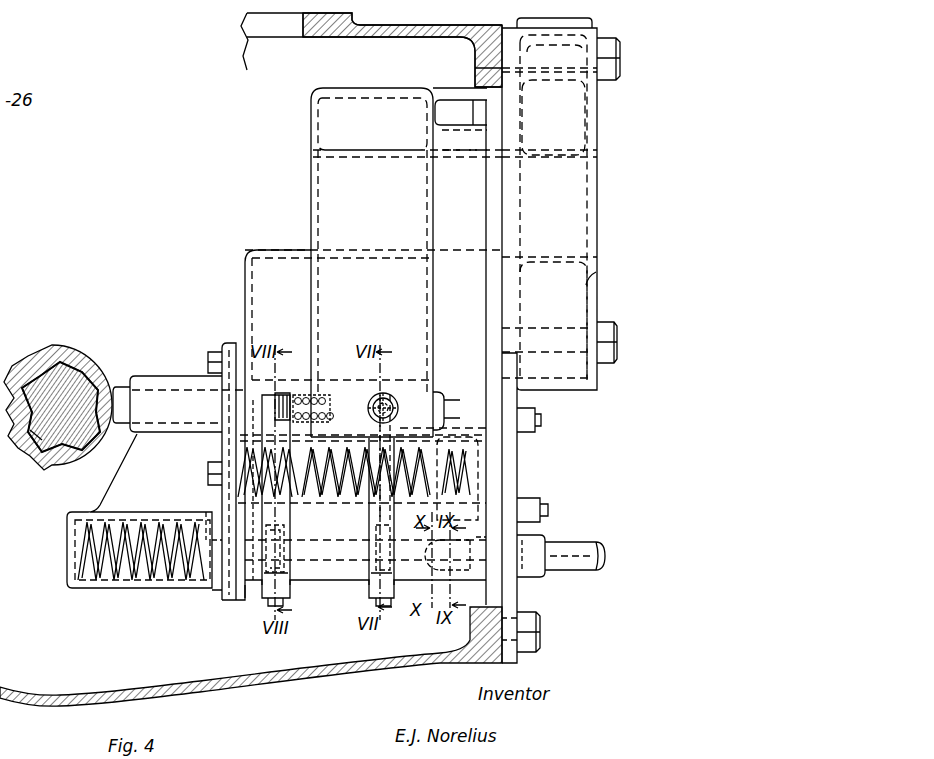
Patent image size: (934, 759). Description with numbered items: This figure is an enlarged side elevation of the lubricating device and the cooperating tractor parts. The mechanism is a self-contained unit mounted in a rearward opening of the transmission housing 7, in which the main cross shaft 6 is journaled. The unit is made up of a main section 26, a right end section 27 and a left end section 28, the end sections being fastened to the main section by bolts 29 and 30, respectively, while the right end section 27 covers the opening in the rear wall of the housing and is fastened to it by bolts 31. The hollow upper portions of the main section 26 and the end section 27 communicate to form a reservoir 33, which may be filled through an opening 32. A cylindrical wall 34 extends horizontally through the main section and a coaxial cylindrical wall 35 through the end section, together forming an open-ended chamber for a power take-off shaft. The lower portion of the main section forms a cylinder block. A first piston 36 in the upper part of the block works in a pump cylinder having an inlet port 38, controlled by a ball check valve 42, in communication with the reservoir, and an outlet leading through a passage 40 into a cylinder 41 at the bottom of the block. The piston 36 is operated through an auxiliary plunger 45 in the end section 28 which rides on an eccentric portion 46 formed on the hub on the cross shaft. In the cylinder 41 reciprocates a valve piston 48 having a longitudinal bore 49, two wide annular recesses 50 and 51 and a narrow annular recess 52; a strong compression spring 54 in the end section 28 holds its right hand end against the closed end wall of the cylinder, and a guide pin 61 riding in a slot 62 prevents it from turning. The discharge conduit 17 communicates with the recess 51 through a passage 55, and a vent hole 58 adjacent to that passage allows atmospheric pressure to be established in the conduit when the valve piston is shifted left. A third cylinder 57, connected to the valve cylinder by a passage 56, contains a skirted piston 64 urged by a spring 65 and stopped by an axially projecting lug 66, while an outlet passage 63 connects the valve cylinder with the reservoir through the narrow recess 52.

The main cross shaft 6 is at (40, 446).
The transmission housing 7 is at (312, 38).
The discharge conduit 17 is at (578, 552).
The main section 26 is at (270, 252).
The right end section 27 is at (597, 190).
The left end section 28 is at (186, 378).
The bolts 29 is at (478, 112).
The bolts 30 is at (213, 350).
The bolts 31 is at (610, 44).
The opening 32 is at (568, 24).
The reservoir 33 is at (592, 282).
The cylindrical wall 34 is at (382, 252).
The cylindrical wall 35 is at (552, 258).
The first piston 36 is at (345, 396).
The inlet port 38 is at (452, 402).
The passage 40 is at (378, 526).
The cylinder 41 is at (312, 570).
The ball check valve 42 is at (392, 396).
The auxiliary plunger 45 is at (118, 386).
The eccentric portion 46 is at (80, 352).
The valve piston 48 is at (232, 595).
The longitudinal bore 49 is at (350, 560).
The annular recess 50 is at (388, 580).
The annular recess 51 is at (462, 570).
The narrow annular recess 52 is at (300, 548).
The compression spring 54 is at (160, 590).
The passage 55 is at (514, 572).
The passage 56 is at (508, 508).
The third cylinder 57 is at (482, 455).
The vent hole 58 is at (432, 572).
The guide pin 61 is at (214, 515).
The slot 62 is at (157, 516).
The outlet passage 63 is at (280, 492).
The skirted piston 64 is at (460, 432).
The spring 65 is at (234, 448).
The lug 66 is at (500, 470).